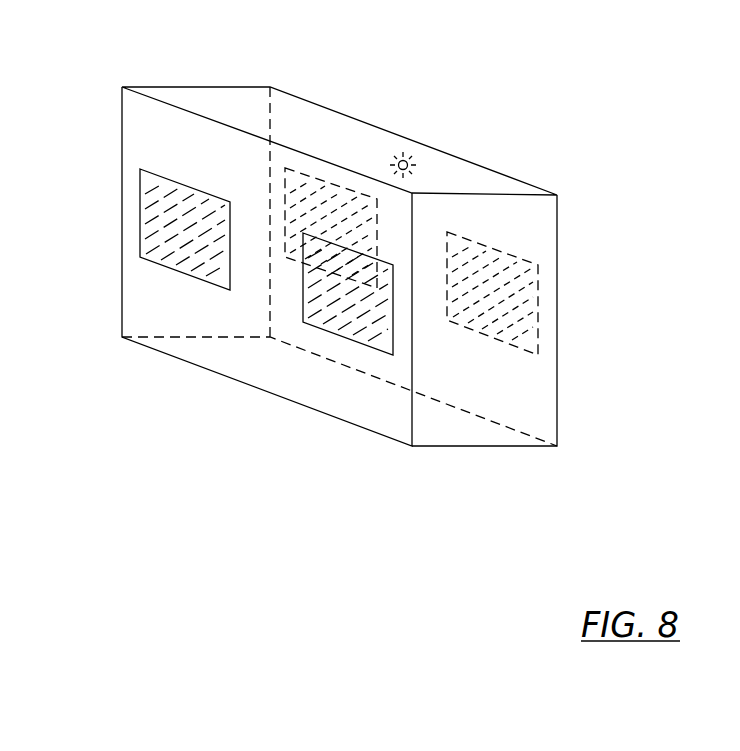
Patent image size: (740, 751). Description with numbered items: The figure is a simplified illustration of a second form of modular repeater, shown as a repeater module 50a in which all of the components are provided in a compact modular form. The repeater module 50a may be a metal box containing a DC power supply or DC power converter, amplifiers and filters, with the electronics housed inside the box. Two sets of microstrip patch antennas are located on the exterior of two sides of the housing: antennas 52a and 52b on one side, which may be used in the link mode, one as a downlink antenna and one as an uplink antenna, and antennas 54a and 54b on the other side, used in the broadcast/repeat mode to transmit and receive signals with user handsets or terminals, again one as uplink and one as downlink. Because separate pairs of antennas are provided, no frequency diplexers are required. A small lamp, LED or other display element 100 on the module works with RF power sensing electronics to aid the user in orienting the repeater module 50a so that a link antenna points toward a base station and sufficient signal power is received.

The repeater module 50a is at (105, 357).
The link mode antenna 52a is at (334, 182).
The link mode antenna 52b is at (533, 278).
The broadcast/repeat mode antenna 54a is at (140, 221).
The broadcast/repeat mode antenna 54b is at (340, 325).
The display element 100 is at (403, 158).